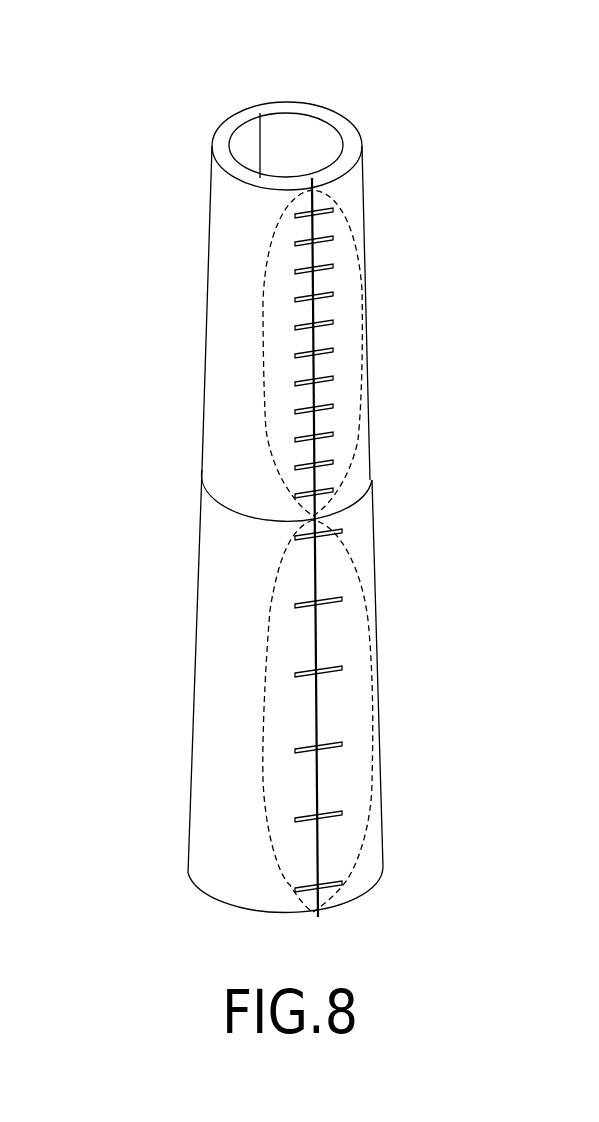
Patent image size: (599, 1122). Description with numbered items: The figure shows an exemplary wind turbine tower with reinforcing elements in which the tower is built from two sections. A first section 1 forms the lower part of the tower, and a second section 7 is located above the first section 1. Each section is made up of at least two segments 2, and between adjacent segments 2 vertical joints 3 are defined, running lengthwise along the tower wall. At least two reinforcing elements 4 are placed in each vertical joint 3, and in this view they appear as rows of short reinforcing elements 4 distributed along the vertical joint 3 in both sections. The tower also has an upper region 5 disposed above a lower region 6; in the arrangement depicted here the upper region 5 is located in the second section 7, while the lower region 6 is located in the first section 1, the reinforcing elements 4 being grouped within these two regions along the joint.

The first section 1 is at (268, 475).
The segments 2 is at (230, 222).
The vertical joints 3 is at (260, 115).
The reinforcing elements 4 is at (337, 325).
The upper region 5 is at (258, 287).
The lower region 6 is at (388, 673).
The second section 7 is at (186, 352).